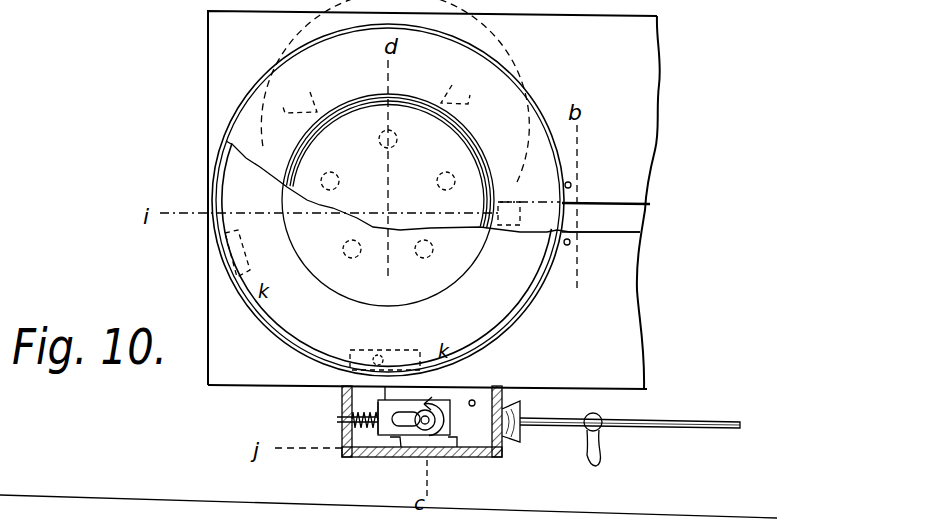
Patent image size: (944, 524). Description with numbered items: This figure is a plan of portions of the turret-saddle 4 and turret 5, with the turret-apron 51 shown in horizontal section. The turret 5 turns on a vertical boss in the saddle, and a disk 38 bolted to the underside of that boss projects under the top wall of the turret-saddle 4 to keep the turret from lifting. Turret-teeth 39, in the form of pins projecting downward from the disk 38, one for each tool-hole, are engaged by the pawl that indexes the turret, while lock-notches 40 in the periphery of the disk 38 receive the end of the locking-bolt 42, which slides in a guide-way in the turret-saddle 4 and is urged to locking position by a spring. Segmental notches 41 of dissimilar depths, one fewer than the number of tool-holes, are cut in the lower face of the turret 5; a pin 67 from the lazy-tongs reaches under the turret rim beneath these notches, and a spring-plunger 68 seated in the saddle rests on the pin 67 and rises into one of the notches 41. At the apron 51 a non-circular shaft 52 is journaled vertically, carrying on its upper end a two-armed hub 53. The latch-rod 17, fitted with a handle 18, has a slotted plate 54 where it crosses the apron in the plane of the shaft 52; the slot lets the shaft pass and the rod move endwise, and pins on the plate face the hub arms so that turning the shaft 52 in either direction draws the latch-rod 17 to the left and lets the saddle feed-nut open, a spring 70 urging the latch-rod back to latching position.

The turret-saddle 4 is at (208, 80).
The turret 5 is at (280, 322).
The latch-rod 17 is at (647, 428).
The handle 18 is at (598, 465).
The disk 38 is at (357, 115).
The turret-teeth 39 is at (398, 140).
The lock-notches 40 is at (440, 90).
The segmental notches 41 is at (246, 266).
The locking-bolt 42 is at (598, 226).
The apron 51 is at (462, 450).
The non-circular shaft 52 is at (420, 424).
The two-armed hub 53 is at (430, 440).
The slotted plate 54 is at (387, 432).
The pin 67 is at (385, 393).
The spring-plunger 68 is at (376, 356).
The spring 70 is at (360, 427).